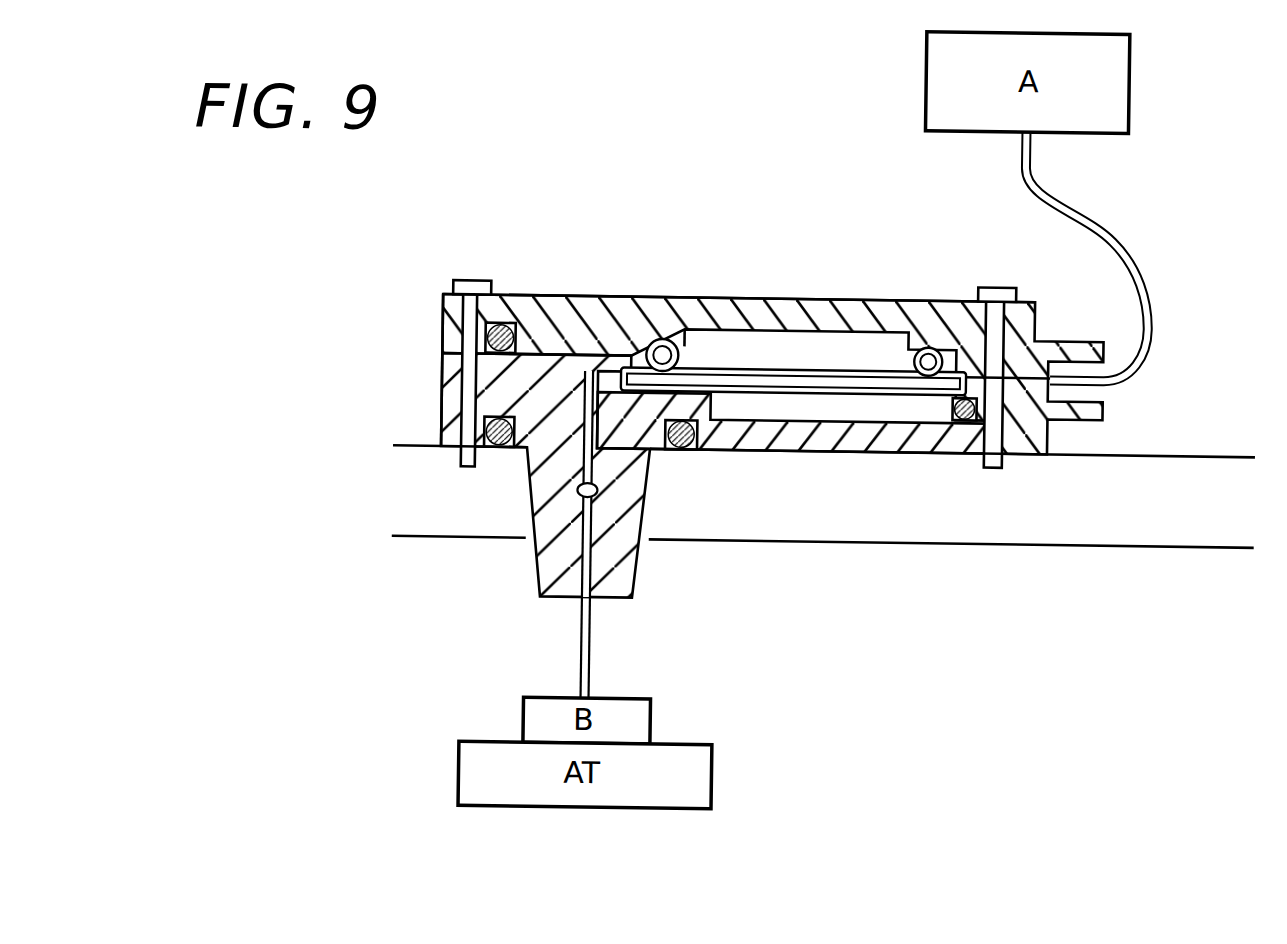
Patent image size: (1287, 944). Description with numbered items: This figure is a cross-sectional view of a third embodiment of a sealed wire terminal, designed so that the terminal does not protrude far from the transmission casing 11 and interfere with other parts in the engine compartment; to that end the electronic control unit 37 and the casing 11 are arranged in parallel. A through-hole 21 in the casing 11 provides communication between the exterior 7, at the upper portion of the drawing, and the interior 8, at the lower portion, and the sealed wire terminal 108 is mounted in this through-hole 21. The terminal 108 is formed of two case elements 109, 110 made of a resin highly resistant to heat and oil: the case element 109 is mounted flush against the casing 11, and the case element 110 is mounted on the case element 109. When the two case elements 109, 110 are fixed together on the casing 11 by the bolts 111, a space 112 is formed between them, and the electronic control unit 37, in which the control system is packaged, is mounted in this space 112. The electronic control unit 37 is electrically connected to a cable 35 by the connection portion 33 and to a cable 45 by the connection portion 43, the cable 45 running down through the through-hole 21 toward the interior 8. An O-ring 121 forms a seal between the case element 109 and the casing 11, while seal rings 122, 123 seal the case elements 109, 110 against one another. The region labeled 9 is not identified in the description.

The exterior 7 is at (708, 139).
The interior 8 is at (853, 680).
The partition wall 9 is at (1116, 513).
The transmission casing 11 is at (1203, 443).
The through-hole 21 is at (641, 509).
The connection portion 33 is at (951, 297).
The cable 35 is at (1067, 382).
The electronic control unit 37 is at (862, 359).
The connection portion 43 is at (646, 348).
The cable 45 is at (578, 603).
The sealed wire terminal 108 is at (410, 323).
The case element 109 is at (838, 445).
The case element 110 is at (821, 298).
The bolts 111 is at (462, 285).
The space 112 is at (724, 338).
The O-ring 121 is at (498, 456).
The seal ring 122 is at (498, 327).
The seal ring 123 is at (960, 420).